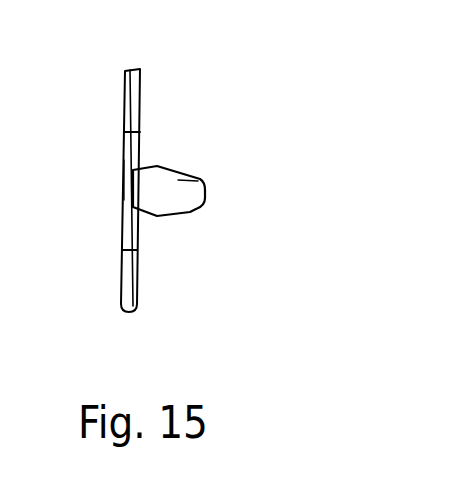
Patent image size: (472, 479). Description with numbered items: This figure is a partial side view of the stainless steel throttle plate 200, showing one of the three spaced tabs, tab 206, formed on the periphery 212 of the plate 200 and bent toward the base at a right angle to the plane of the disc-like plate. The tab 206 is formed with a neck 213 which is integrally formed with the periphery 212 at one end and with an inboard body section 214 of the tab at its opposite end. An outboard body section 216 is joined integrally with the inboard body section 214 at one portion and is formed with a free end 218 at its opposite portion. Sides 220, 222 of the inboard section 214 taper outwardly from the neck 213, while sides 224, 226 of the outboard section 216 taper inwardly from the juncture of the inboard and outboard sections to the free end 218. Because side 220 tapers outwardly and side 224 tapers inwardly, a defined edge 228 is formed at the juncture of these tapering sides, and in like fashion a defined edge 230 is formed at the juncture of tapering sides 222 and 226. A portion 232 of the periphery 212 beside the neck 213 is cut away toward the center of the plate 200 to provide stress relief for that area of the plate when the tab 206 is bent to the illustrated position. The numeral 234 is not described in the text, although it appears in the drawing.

The throttle plate 200 is at (147, 81).
The tab 206 is at (189, 227).
The periphery 212 is at (125, 90).
The neck 213 is at (126, 192).
The inboard body section 214 is at (151, 186).
The outboard body section 216 is at (200, 174).
The free end 218 is at (205, 187).
The side of inboard section 220 is at (143, 217).
The side of inboard section 222 is at (150, 165).
The side of outboard section 224 is at (197, 214).
The side of outboard section 226 is at (170, 167).
The defined edge 228 is at (152, 218).
The defined edge 230 is at (162, 163).
The cut-away portion of periphery 232 is at (126, 238).
The upper strip portion 234 is at (124, 147).